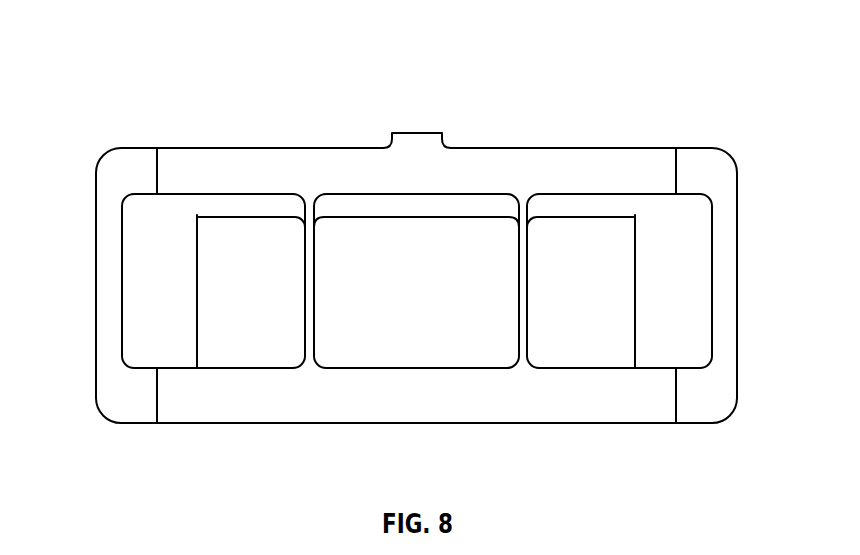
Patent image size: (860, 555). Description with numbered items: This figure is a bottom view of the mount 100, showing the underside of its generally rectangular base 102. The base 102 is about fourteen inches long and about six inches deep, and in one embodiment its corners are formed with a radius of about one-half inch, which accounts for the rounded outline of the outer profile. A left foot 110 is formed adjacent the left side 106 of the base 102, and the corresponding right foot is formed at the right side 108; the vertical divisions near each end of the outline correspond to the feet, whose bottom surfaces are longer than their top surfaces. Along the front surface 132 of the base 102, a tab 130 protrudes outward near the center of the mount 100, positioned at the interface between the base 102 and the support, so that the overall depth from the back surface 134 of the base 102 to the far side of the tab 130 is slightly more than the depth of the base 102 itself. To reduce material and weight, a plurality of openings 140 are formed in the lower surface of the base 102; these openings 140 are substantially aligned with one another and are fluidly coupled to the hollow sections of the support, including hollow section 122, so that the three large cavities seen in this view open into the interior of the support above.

The mount 100 is at (760, 43).
The base 102 is at (84, 298).
The left side 106 is at (732, 273).
The right side 108 is at (96, 184).
The left foot 110 is at (710, 188).
The hollow section 122 is at (96, 384).
The tab 130 is at (415, 141).
The front surface 132 is at (517, 146).
The back surface 134 is at (220, 423).
The openings 140 is at (252, 258).